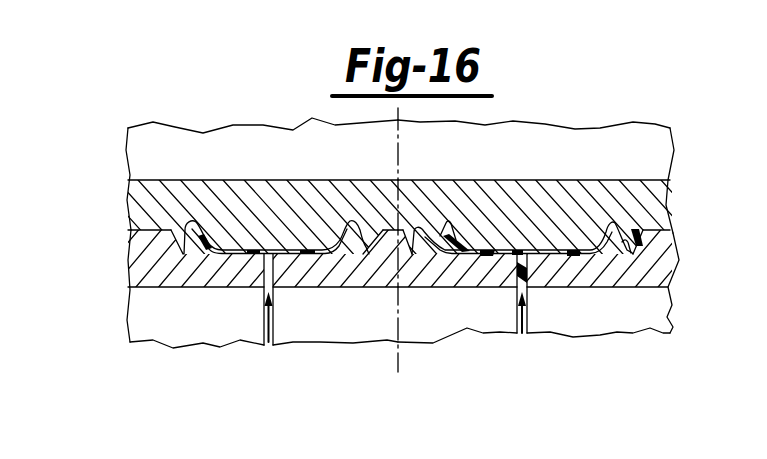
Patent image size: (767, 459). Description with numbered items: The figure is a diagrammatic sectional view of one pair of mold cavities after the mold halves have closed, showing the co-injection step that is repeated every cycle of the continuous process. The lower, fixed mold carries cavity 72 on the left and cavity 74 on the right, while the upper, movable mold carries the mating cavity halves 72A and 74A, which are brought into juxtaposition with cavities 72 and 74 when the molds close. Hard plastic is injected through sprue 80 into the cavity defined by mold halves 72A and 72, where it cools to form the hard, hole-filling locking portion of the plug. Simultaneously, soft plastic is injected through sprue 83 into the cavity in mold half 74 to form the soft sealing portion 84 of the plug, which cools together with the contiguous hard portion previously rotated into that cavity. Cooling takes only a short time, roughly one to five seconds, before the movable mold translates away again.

The mold cavity 72 is at (203, 274).
The mold cavity half 72A is at (257, 198).
The mold cavity 74 is at (582, 276).
The mold cavity half 74A is at (470, 192).
The sprue 80 is at (277, 333).
The sprue 83 is at (518, 316).
The sealing portion 84 is at (650, 252).